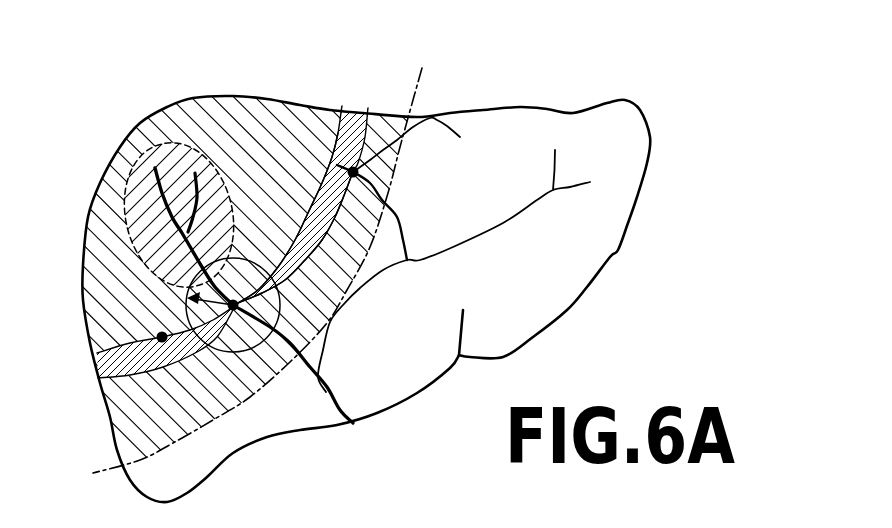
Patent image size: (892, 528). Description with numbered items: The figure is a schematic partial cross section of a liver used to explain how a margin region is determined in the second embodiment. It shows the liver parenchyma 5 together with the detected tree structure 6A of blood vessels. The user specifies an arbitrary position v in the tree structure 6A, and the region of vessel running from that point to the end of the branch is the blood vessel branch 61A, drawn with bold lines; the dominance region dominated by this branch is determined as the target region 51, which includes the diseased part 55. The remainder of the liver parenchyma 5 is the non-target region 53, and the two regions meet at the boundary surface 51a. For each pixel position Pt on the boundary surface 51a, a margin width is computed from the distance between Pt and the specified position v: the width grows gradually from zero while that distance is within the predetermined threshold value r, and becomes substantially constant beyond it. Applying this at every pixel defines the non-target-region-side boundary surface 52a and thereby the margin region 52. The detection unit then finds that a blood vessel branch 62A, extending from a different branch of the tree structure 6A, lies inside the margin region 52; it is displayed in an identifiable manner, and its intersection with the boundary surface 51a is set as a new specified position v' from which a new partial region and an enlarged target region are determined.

The liver parenchyma 5 is at (527, 107).
The target region 51 is at (215, 110).
The boundary surface 51a is at (318, 107).
The margin region 52 is at (353, 110).
The non-target-region-side boundary surface 52a is at (385, 113).
The non-target region 53 is at (563, 292).
The diseased part 55 is at (127, 183).
The blood vessel branch 61A is at (177, 160).
The blood vessel branch 62A is at (337, 150).
The predetermined threshold value r is at (190, 322).
The position on boundary surface Pt is at (162, 337).
The specified position v is at (291, 398).
The specified position v' is at (400, 165).
The tree structure of blood vessels 6A is at (343, 403).